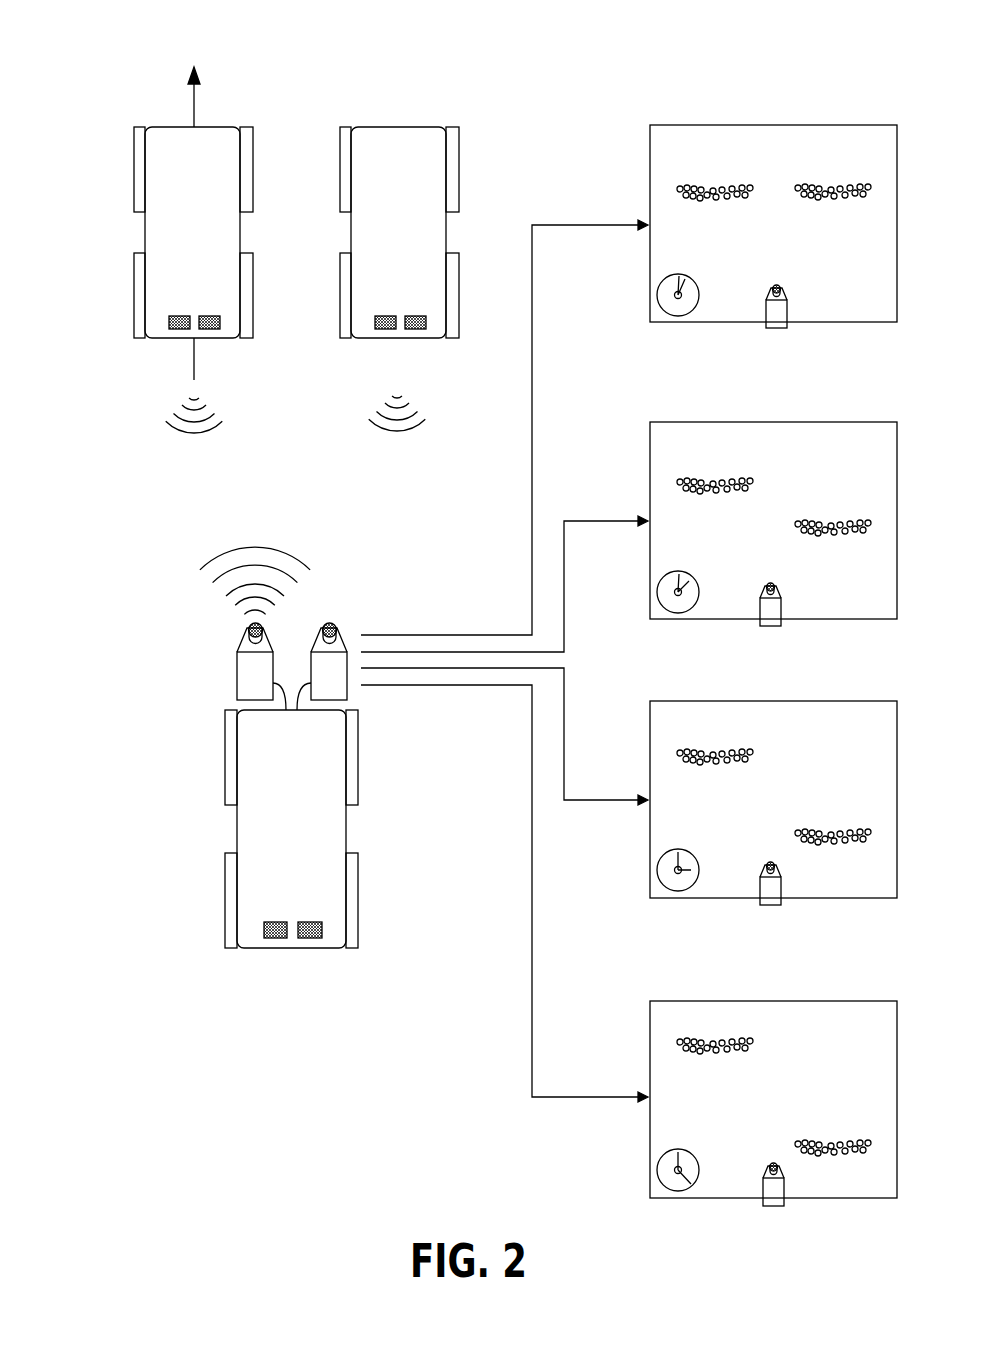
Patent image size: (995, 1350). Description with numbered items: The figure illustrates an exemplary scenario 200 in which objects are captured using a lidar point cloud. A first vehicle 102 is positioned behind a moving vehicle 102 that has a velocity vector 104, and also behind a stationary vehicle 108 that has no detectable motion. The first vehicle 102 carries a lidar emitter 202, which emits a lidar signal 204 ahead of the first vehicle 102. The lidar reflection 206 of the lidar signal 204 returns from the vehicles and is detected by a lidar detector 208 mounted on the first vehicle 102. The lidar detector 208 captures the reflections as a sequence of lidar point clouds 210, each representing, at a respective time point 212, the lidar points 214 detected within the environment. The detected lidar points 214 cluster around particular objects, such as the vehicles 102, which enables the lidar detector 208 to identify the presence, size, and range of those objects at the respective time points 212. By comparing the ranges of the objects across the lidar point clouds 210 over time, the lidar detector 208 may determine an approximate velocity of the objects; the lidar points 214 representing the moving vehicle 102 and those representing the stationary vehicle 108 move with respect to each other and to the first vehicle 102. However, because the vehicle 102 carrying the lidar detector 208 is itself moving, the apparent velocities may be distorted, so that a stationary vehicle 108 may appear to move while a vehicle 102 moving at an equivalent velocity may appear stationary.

The exemplary scenario 200 is at (833, 40).
The vehicle 102 is at (160, 127).
The velocity vector 104 is at (190, 72).
The stationary vehicle 108 is at (400, 127).
The lidar emitter 202 is at (241, 650).
The lidar signal 204 is at (210, 555).
The lidar reflection 206 is at (178, 418).
The lidar detector 208 is at (330, 623).
The lidar point cloud 210 is at (735, 125).
The time point 212 is at (684, 275).
The lidar point 214 is at (735, 185).